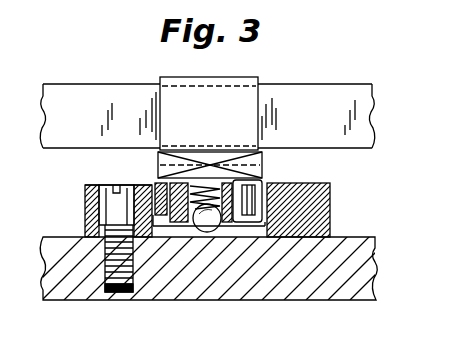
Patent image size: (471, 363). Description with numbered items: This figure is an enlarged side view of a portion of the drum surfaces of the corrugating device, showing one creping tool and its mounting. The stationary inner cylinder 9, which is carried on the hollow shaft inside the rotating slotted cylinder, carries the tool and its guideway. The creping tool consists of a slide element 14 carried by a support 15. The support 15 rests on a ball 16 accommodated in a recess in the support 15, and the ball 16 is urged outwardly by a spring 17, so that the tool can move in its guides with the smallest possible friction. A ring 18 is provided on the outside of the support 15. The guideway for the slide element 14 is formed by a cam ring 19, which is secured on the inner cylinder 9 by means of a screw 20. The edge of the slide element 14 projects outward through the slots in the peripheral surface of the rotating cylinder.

The inner cylinder 9 is at (345, 288).
The slide element 14 is at (238, 77).
The support 15 is at (164, 165).
The ball 16 is at (201, 233).
The spring 17 is at (206, 182).
The ring 18 is at (262, 203).
The cam ring 19 is at (85, 205).
The screw 20 is at (100, 273).